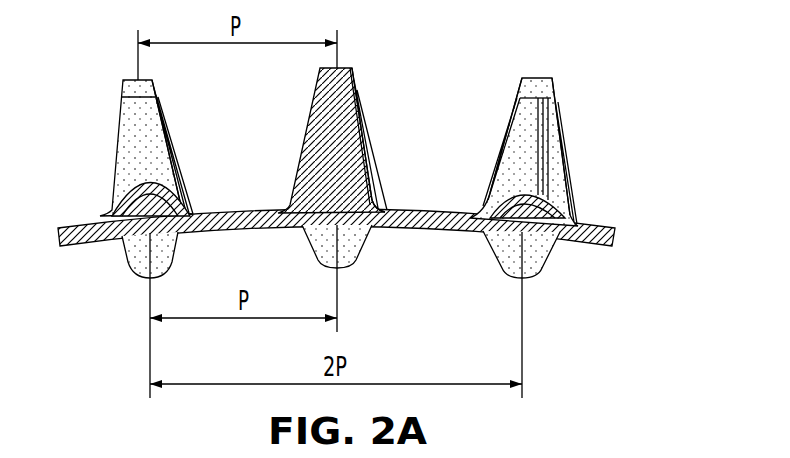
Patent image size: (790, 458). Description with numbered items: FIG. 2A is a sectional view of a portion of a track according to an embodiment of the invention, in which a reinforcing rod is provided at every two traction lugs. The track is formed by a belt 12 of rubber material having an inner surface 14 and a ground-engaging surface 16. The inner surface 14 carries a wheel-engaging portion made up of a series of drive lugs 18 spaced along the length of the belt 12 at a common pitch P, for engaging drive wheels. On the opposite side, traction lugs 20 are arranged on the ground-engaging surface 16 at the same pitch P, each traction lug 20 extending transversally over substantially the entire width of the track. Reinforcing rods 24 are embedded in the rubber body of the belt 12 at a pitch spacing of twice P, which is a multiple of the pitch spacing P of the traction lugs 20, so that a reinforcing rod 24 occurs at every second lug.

The belt 12 is at (641, 128).
The inner surface 14 is at (577, 255).
The ground-engaging surface 16 is at (572, 78).
The drive lugs 18 is at (309, 256).
The traction lugs 20 is at (320, 90).
The reinforcing rods 24 is at (122, 256).